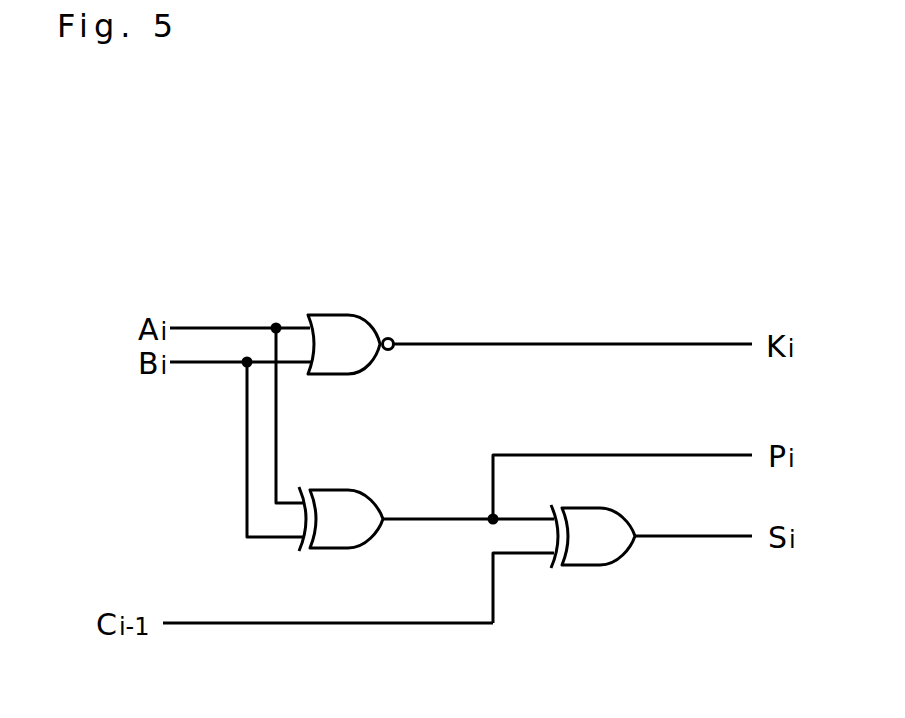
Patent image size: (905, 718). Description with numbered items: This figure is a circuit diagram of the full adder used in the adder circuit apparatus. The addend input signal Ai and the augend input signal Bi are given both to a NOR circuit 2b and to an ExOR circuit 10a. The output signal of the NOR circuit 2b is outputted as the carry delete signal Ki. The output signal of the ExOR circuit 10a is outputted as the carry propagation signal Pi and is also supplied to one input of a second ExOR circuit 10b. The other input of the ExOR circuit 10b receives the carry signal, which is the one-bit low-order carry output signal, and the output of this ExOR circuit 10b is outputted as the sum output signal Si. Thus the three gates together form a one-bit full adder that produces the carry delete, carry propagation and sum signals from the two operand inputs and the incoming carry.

The NOR circuit 2b is at (368, 322).
The ExOR circuit 10a is at (347, 490).
The ExOR circuit 10b is at (598, 565).